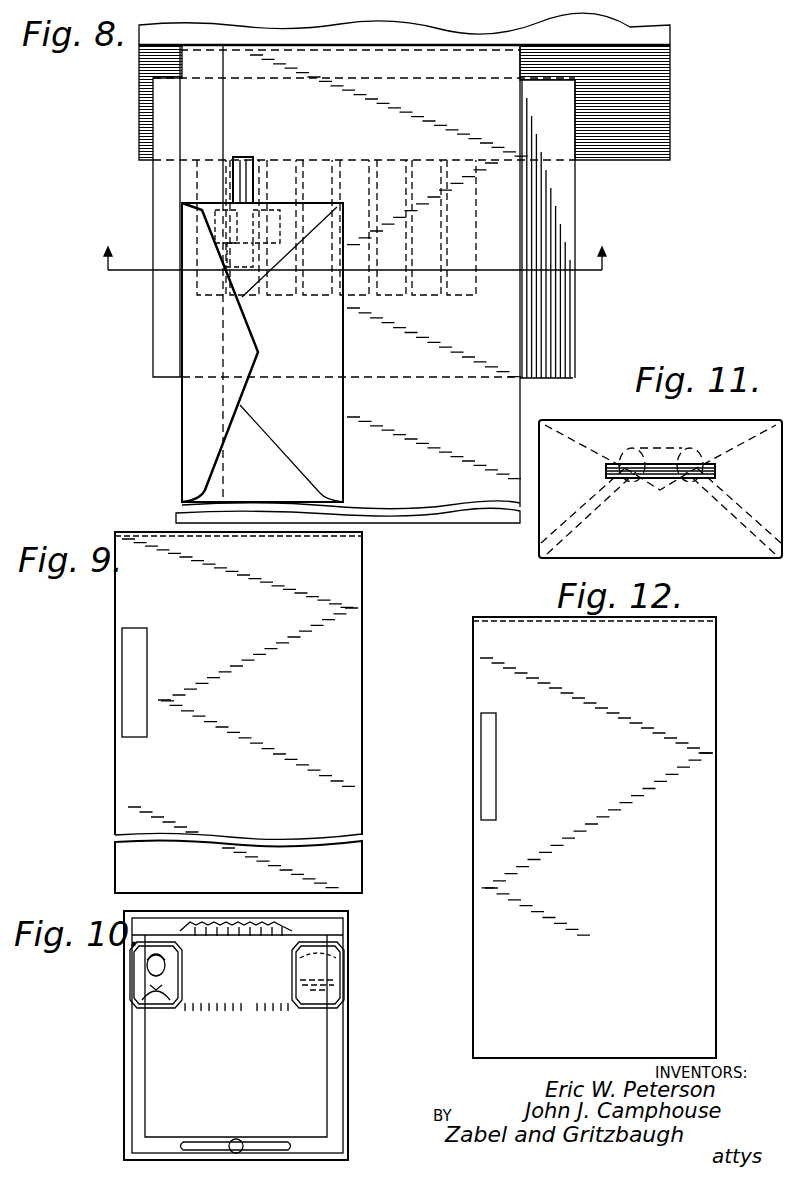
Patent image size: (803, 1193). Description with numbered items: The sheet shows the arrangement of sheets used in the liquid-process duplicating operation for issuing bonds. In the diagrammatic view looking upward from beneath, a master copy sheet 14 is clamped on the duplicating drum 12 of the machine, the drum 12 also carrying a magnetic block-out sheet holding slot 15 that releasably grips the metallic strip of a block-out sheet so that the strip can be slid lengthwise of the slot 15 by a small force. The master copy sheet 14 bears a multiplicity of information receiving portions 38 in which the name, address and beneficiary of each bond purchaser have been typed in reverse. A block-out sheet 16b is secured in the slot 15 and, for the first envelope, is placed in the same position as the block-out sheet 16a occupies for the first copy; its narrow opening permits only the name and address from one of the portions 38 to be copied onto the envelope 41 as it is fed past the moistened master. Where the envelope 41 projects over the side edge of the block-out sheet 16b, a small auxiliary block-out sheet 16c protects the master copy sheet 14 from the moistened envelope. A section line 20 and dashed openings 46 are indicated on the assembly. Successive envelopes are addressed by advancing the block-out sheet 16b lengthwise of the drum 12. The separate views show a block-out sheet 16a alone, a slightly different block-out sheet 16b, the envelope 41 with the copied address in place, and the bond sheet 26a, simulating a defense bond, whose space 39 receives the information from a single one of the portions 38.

In FIG. 8, the duplicating drum 12 is at (139, 94).
In FIG. 8, the master copy sheet 14 is at (162, 199).
In FIG. 8, the magnetic block-out sheet holding slot 15 is at (655, 52).
In FIG. 9, the block-out sheet 16a is at (122, 608).
In FIG. 8, the block-out sheet 16b is at (290, 62).
In FIG. 12, the block-out sheet 16b is at (480, 657).
In FIG. 8, the auxiliary block-out sheet 16c is at (185, 180).
In FIG. 8, the section line 20 is at (356, 275).
In FIG. 8, the information receiving portions 38 is at (316, 158).
In FIG. 8, the envelope 41 is at (188, 448).
In FIG. 11, the envelope 41 is at (730, 560).
In FIG. 8, the slot openings 46 is at (247, 241).
In FIG. 10, the space 39 is at (249, 994).
In FIG. 10, the bond sheet 26a is at (261, 1035).